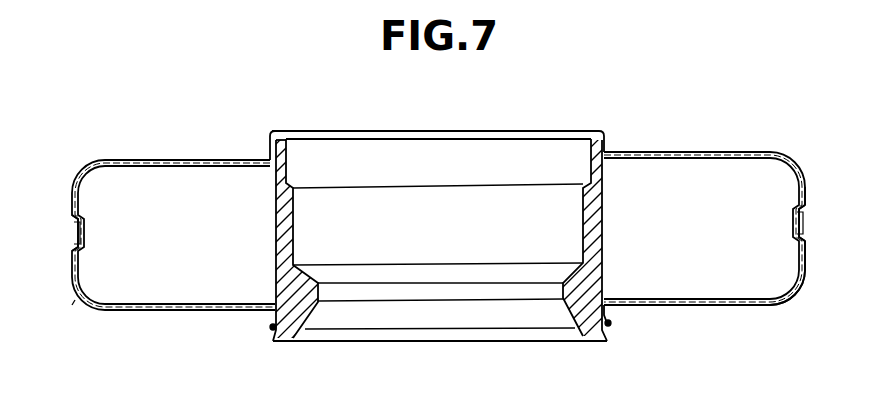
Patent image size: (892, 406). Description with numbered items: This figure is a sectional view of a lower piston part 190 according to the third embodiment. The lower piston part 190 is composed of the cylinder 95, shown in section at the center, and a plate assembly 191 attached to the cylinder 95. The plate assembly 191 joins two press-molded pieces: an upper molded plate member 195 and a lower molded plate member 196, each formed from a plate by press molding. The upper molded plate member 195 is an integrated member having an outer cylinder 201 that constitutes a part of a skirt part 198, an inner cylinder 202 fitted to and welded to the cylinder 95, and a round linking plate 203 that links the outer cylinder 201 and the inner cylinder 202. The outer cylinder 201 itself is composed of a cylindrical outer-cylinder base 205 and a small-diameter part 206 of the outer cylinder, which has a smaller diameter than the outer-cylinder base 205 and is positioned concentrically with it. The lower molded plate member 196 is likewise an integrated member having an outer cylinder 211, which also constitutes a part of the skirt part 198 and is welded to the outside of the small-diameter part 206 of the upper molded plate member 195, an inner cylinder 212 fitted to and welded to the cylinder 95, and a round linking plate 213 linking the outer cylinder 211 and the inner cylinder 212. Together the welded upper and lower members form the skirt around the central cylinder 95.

The cylinder 95 is at (388, 130).
The lower piston part 190 is at (281, 130).
The plate assembly 191 is at (78, 163).
The upper molded plate member 195 is at (172, 160).
The lower molded plate member 196 is at (178, 312).
The skirt part 198 is at (70, 203).
The outer cylinder 201 is at (806, 178).
The inner cylinder 202 is at (606, 146).
The round linking plate 203 is at (705, 152).
The outer-cylinder base 205 is at (809, 197).
The small-diameter part of the outer cylinder 206 is at (797, 221).
The outer cylinder 211 is at (807, 258).
The inner cylinder 212 is at (611, 311).
The round linking plate 213 is at (741, 306).